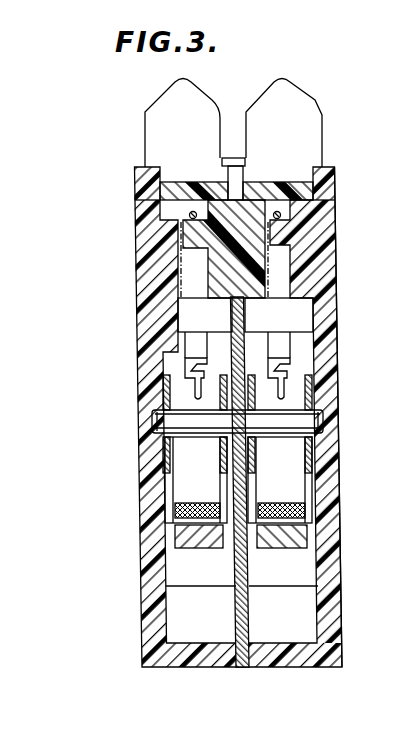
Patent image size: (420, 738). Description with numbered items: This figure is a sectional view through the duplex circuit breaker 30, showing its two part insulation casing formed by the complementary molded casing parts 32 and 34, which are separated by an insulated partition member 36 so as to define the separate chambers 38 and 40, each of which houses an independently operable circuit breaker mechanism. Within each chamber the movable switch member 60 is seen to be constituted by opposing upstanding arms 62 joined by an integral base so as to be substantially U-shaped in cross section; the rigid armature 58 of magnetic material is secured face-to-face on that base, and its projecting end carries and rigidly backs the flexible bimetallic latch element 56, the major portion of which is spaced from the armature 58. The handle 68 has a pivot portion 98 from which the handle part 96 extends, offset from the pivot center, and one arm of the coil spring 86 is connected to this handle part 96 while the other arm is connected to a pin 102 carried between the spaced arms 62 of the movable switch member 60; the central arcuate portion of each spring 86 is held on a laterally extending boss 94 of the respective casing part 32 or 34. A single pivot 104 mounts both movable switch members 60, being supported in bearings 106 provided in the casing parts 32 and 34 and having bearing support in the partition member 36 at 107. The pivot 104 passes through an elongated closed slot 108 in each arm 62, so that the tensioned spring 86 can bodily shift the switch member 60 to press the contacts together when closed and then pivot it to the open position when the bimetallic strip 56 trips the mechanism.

The duplex circuit breaker 30 is at (244, 436).
The casing part 32 is at (138, 297).
The casing part 34 is at (339, 322).
The partition member 36 is at (243, 657).
The chamber 38 is at (182, 575).
The chamber 40 is at (305, 562).
The bimetallic current-responsive latch element 56 is at (190, 501).
The rigid armature 58 is at (178, 554).
The movable switch member 60 is at (318, 384).
The upstanding arms 62 is at (313, 463).
The handle 68 is at (167, 108).
The spring 86 is at (196, 262).
The boss 94 is at (190, 313).
The handle part 96 is at (192, 217).
The pivot portion 98 is at (342, 240).
The pin 102 is at (182, 388).
The pivot 104 is at (320, 410).
The bearings 106 is at (256, 416).
The bearing support 107 is at (237, 418).
The elongated closed slot 108 is at (210, 440).